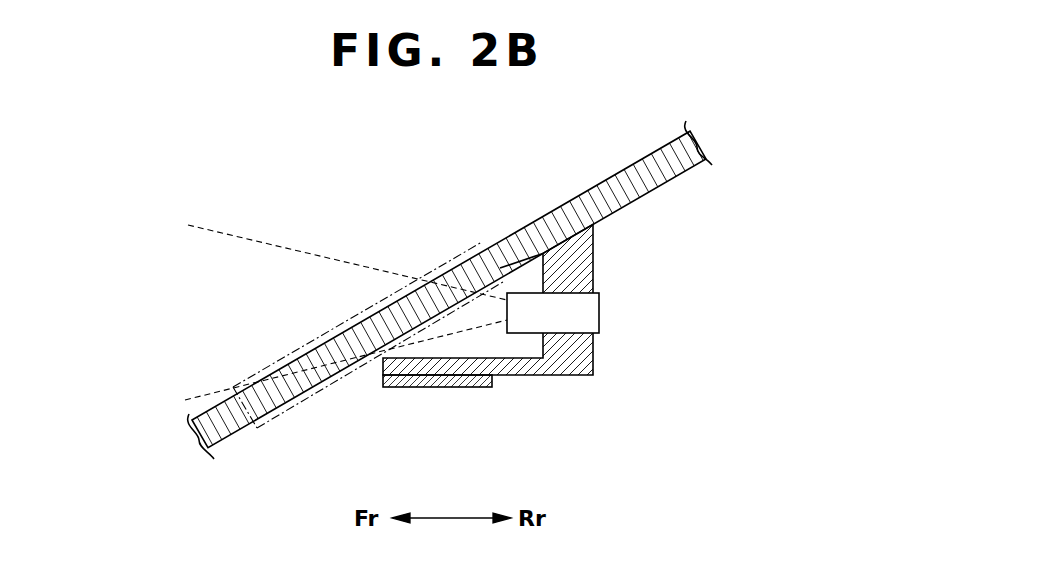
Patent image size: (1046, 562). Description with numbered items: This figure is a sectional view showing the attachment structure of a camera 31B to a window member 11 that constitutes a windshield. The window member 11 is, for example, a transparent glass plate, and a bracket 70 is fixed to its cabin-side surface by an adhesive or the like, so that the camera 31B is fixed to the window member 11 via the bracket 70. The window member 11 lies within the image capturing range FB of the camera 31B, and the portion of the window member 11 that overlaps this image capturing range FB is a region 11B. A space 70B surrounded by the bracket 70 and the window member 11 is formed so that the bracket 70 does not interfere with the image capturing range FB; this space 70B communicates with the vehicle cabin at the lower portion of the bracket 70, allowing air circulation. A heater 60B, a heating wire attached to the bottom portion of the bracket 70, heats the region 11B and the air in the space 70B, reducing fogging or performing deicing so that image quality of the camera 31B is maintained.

The window member 11 is at (633, 163).
The region 11B is at (434, 266).
The image capturing range FB is at (321, 259).
The bracket 70 is at (575, 376).
The space 70B is at (517, 281).
The heater 60B is at (444, 388).
The camera 31B is at (600, 309).